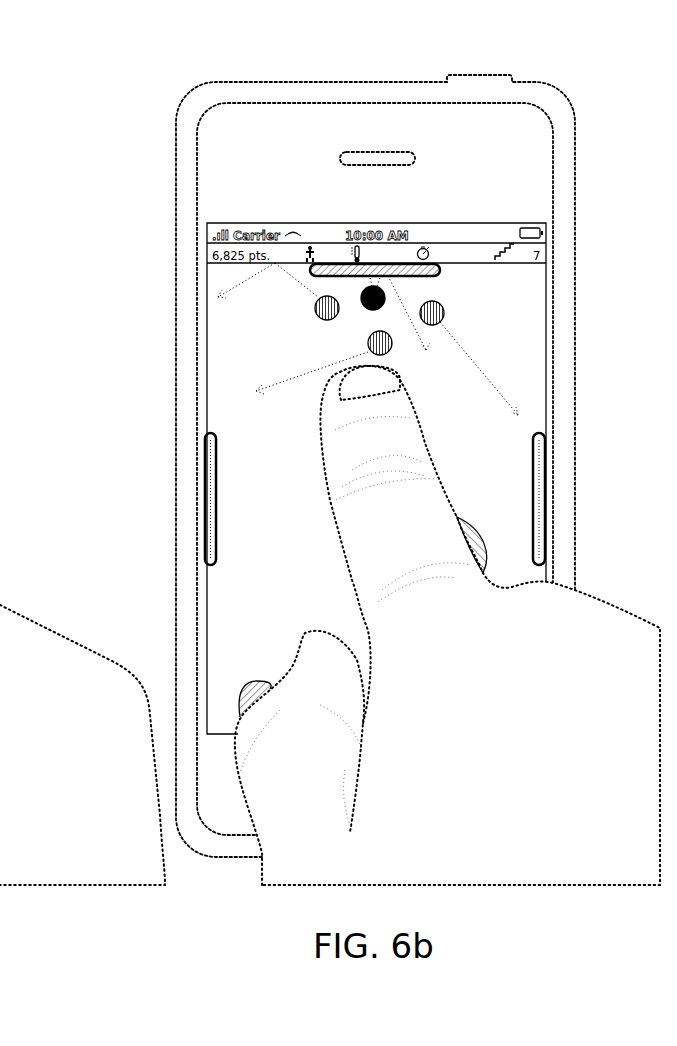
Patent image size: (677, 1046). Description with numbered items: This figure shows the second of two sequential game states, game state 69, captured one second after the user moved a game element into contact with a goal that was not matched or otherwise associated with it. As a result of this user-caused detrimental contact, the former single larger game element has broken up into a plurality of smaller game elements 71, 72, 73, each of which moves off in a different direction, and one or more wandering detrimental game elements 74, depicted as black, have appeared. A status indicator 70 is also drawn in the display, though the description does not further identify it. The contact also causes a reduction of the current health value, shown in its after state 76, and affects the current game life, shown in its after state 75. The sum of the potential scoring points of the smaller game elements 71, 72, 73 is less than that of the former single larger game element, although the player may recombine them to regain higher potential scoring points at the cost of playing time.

The game state 69 is at (238, 612).
The timer readout 70 is at (448, 243).
The smaller game element 71 is at (320, 310).
The smaller game element 72 is at (368, 343).
The smaller game element 73 is at (444, 313).
The wandering detrimental game element 74 is at (385, 298).
The after state of current game life 75 is at (318, 246).
The after state of current health value 76 is at (378, 247).